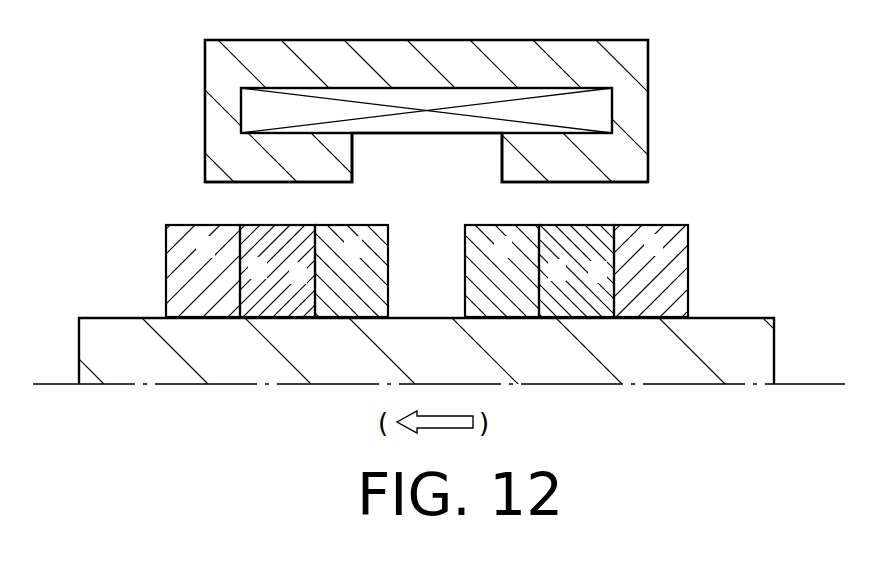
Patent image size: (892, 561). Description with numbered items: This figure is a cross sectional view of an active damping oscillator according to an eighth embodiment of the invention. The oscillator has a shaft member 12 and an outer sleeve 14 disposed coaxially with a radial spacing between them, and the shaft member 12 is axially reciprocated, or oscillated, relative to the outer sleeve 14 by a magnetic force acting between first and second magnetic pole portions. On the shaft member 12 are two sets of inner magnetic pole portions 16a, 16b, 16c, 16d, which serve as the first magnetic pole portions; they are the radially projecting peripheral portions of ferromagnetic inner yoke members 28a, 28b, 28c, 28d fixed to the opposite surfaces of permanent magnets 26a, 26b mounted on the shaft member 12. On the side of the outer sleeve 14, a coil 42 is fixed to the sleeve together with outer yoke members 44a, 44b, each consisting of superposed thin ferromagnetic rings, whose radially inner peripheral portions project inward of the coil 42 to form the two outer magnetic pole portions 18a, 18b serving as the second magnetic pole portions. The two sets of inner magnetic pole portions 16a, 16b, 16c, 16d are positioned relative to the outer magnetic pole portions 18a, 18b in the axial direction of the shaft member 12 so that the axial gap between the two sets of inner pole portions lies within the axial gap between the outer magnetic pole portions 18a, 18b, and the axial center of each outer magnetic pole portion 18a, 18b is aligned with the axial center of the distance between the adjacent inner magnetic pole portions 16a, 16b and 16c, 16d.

The shaft member 12 is at (98, 332).
The outer sleeve 14 is at (267, 63).
The inner magnetic pole portion 16a is at (177, 230).
The inner magnetic pole portion 16b is at (380, 223).
The inner magnetic pole portion 16c is at (480, 232).
The inner magnetic pole portion 16d is at (678, 230).
The outer magnetic pole portion 18a is at (218, 183).
The outer magnetic pole portion 18b is at (626, 174).
The permanent magnet 26a is at (286, 310).
The permanent magnet 26b is at (578, 307).
The inner yoke member 28a is at (198, 340).
The inner yoke member 28b is at (347, 340).
The inner yoke member 28c is at (500, 340).
The inner yoke member 28d is at (646, 340).
The coil 42 is at (420, 95).
The outer yoke member 44a is at (176, 130).
The outer yoke member 44b is at (678, 140).